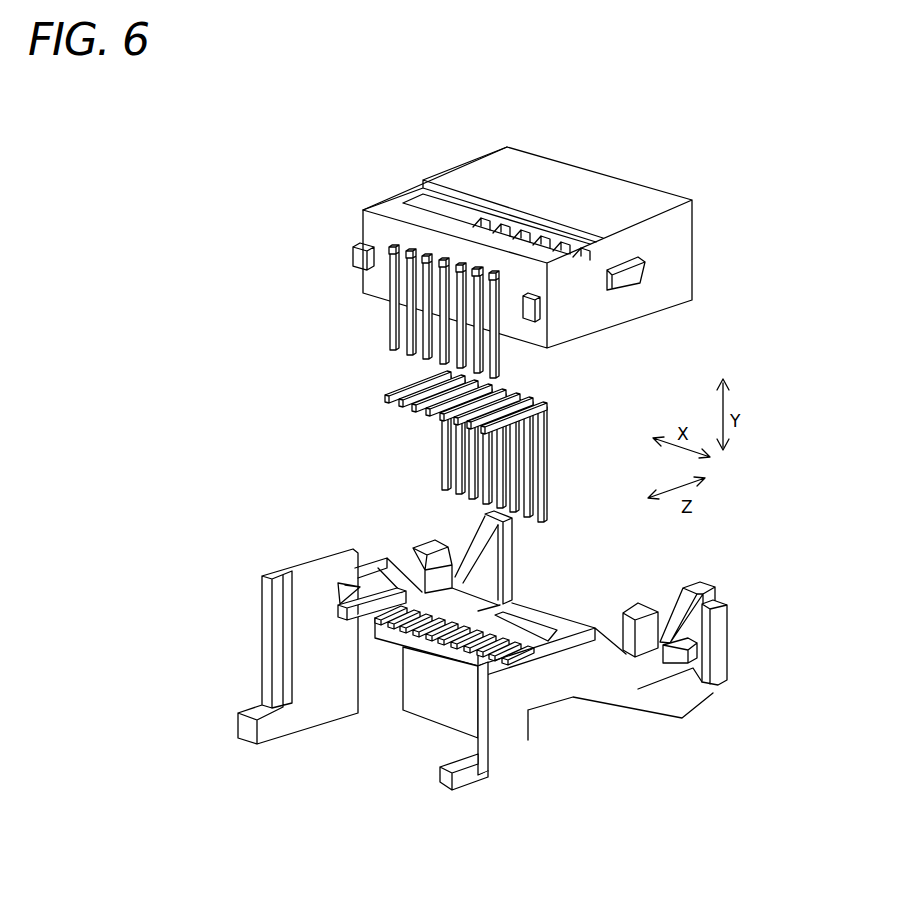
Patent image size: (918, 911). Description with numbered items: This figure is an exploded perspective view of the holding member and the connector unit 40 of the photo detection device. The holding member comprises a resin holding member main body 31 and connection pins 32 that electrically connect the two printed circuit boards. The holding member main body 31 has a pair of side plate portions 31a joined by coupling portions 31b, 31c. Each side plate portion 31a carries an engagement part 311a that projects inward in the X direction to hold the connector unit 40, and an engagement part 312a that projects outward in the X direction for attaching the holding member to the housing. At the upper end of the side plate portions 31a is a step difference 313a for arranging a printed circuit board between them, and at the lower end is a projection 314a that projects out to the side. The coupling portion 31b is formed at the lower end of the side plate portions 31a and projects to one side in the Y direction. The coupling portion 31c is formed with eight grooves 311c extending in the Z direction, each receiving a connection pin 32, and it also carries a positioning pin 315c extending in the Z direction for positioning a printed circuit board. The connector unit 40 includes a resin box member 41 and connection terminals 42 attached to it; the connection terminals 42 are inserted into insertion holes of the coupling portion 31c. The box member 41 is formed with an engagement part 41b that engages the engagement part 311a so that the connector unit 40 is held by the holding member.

The connector unit 40 is at (514, 279).
The box member 41 is at (580, 312).
The engagement part 41b is at (627, 285).
The connection terminal 42 is at (392, 325).
The connection pin 32 is at (440, 449).
The holding member main body 31 is at (495, 645).
The side plate portion 31a is at (490, 565).
The coupling portion 31b is at (673, 697).
The coupling portion 31c is at (438, 710).
The engagement part 311a is at (432, 548).
The groove 311c is at (388, 576).
The engagement part 312a is at (690, 653).
The step difference 313a is at (273, 643).
The projection 314a is at (727, 617).
The positioning pin 315c is at (338, 593).